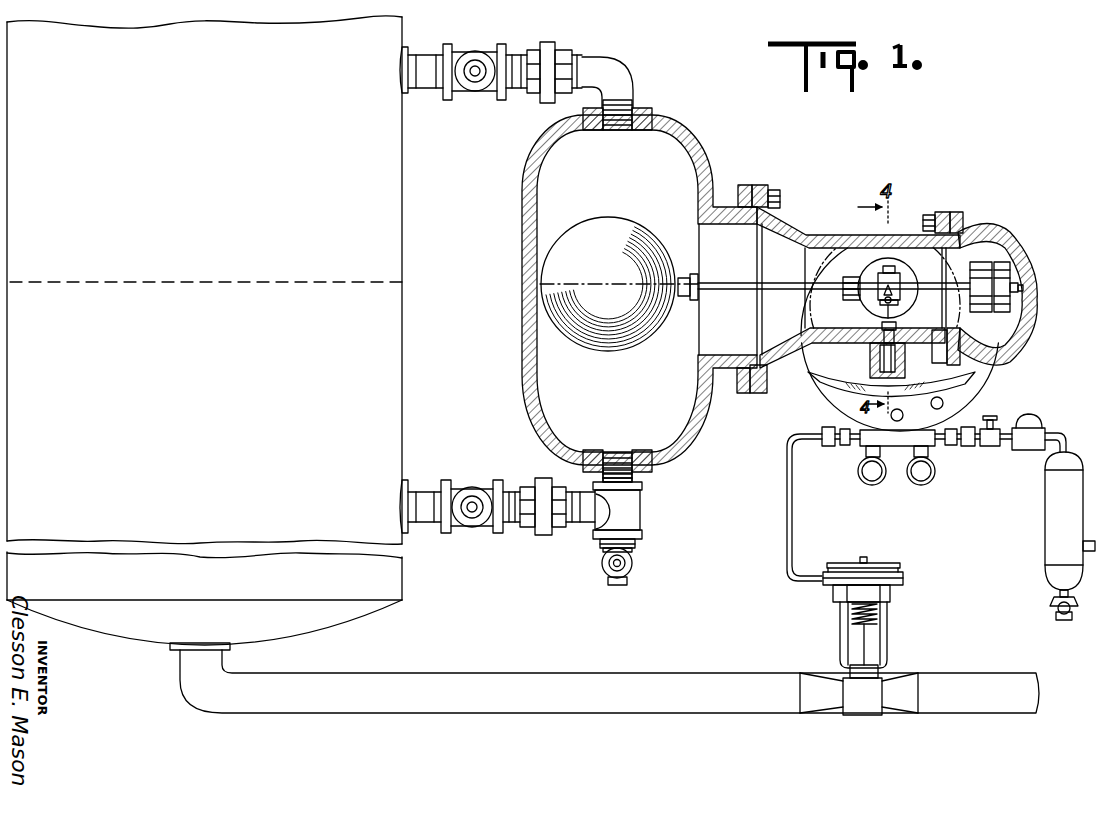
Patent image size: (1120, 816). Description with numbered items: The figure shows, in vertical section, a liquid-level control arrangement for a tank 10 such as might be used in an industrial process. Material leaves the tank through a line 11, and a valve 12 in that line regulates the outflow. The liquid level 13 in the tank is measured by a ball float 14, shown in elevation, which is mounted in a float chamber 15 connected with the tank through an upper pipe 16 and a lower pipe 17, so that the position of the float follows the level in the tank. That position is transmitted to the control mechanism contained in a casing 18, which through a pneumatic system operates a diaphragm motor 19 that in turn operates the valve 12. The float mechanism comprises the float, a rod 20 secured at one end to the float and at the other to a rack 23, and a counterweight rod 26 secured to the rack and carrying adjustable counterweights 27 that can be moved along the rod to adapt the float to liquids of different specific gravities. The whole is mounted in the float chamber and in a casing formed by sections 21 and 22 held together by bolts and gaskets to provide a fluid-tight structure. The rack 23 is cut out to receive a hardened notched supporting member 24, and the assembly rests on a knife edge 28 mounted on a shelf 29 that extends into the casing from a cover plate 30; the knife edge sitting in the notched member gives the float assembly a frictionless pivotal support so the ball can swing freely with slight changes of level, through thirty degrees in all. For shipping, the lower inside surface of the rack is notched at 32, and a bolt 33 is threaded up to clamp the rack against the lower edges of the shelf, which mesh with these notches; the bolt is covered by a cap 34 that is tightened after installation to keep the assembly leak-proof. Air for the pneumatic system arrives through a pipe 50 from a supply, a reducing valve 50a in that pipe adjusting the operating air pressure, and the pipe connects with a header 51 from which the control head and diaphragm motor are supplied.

The tank 10 is at (405, 338).
The line 11 is at (546, 708).
The valve 12 is at (873, 704).
The liquid level 13 is at (234, 281).
The ball float 14 is at (608, 222).
The float chamber 15 is at (697, 158).
The pipe 16 is at (613, 76).
The pipe 17 is at (578, 525).
The casing 18 is at (986, 391).
The diaphragm motor 19 is at (901, 572).
The rod 20 is at (722, 282).
The casing section 21 is at (818, 236).
The casing section 22 is at (1020, 246).
The rack 23 is at (922, 275).
The notched supporting member 24 is at (900, 281).
The counterweight rod 26 is at (1020, 290).
The counterweights 27 is at (997, 312).
The knife edge 28 is at (906, 301).
The shelf 29 is at (886, 301).
The cover plate 30 is at (870, 267).
The notches 32 is at (848, 299).
The bolt 33 is at (878, 367).
The cap 34 is at (899, 368).
The pipe 50 is at (1008, 438).
The reducing valve 50a is at (990, 446).
The header 51 is at (900, 447).